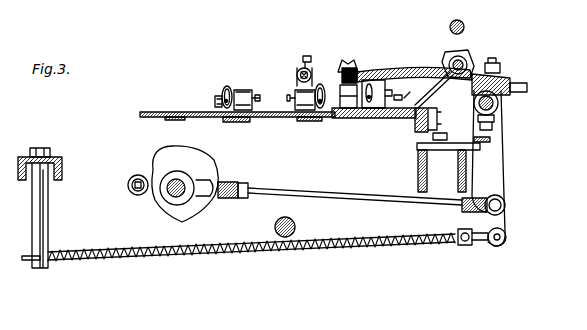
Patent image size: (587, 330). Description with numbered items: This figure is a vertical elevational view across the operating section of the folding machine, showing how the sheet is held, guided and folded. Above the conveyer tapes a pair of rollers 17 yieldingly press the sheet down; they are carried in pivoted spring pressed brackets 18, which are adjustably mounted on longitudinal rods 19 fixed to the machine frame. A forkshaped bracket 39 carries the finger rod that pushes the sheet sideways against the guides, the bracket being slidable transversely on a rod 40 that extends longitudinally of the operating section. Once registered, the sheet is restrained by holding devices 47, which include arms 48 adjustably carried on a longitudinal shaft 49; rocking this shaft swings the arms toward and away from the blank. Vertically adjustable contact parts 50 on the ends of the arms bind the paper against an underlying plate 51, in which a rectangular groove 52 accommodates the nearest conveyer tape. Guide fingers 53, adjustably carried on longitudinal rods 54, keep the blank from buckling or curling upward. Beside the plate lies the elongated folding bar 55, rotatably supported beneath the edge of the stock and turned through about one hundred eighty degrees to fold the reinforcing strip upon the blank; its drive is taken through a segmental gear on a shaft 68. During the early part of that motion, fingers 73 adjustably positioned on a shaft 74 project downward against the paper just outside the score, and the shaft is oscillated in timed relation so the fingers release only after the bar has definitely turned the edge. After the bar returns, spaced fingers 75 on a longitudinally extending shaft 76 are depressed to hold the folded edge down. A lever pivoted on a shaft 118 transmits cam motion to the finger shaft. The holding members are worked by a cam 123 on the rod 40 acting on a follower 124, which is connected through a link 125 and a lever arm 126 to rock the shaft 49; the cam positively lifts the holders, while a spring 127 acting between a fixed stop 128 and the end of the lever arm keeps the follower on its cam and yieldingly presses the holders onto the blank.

The rollers 17 is at (240, 90).
The spring pressed brackets 18 is at (225, 92).
The longitudinal rods 19 is at (216, 102).
The forkshaped bracket 39 is at (433, 117).
The rod 40 is at (162, 200).
The holding devices 47 is at (351, 47).
The arms 48 is at (400, 97).
The longitudinal shaft 49 is at (498, 107).
The contact parts 50 is at (343, 92).
The plate 51 is at (343, 118).
The groove 52 is at (368, 118).
The guide fingers 53 is at (404, 96).
The longitudinal rods 54 is at (383, 83).
The elongated bar 55 is at (415, 131).
The shaft 68 is at (464, 18).
The fingers 73 is at (431, 88).
The shaft 74 is at (466, 58).
The fingers 75 is at (397, 95).
The shaft 76 is at (299, 71).
The shaft 118 is at (297, 227).
The cam 123 is at (151, 158).
The follower 124 is at (128, 185).
The link 125 is at (273, 190).
The lever arm 126 is at (496, 171).
The spring 127 is at (123, 260).
The fixed stop 128 is at (42, 268).